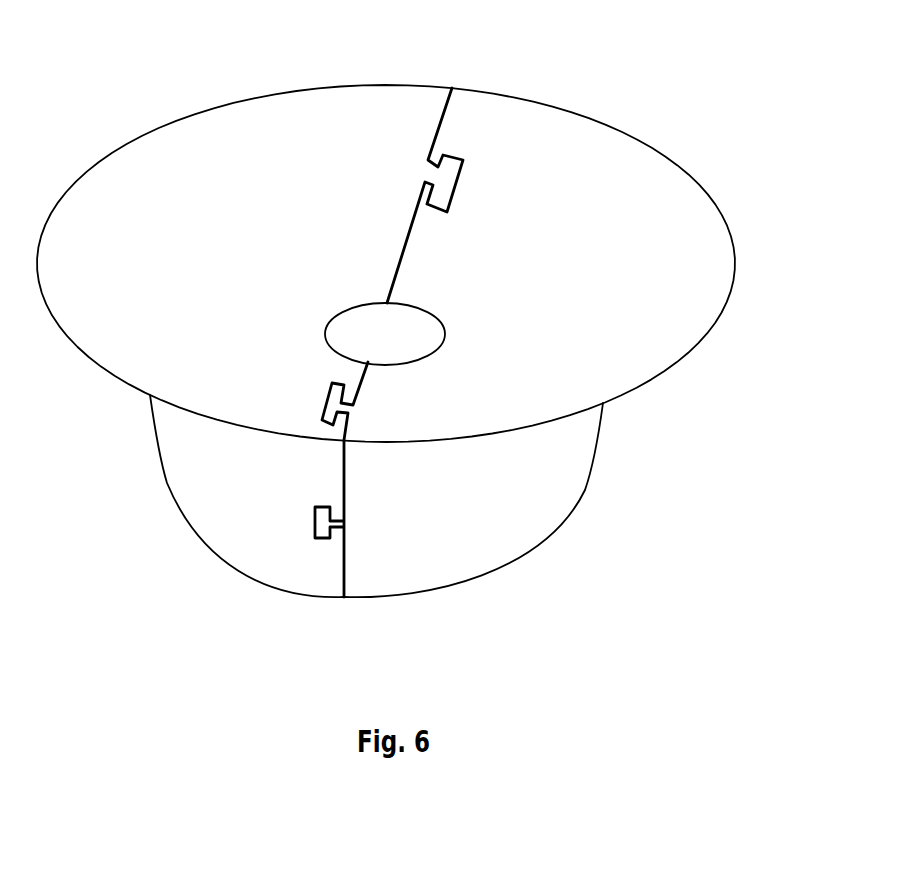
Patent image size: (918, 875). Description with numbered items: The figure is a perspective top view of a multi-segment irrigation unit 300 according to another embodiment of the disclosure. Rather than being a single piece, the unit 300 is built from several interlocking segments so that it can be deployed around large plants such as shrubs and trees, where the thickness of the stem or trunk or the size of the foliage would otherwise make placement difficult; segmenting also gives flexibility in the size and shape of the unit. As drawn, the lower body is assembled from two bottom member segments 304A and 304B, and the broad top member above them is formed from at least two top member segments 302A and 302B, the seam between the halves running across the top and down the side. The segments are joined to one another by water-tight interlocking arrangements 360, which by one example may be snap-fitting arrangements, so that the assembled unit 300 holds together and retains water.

The unit 300 is at (664, 86).
The top member segment 302A is at (670, 312).
The top member segment 302B is at (185, 147).
The bottom member segment 304A is at (490, 522).
The bottom member segment 304B is at (205, 487).
The water-tight interlocking arrangement 360 is at (315, 537).